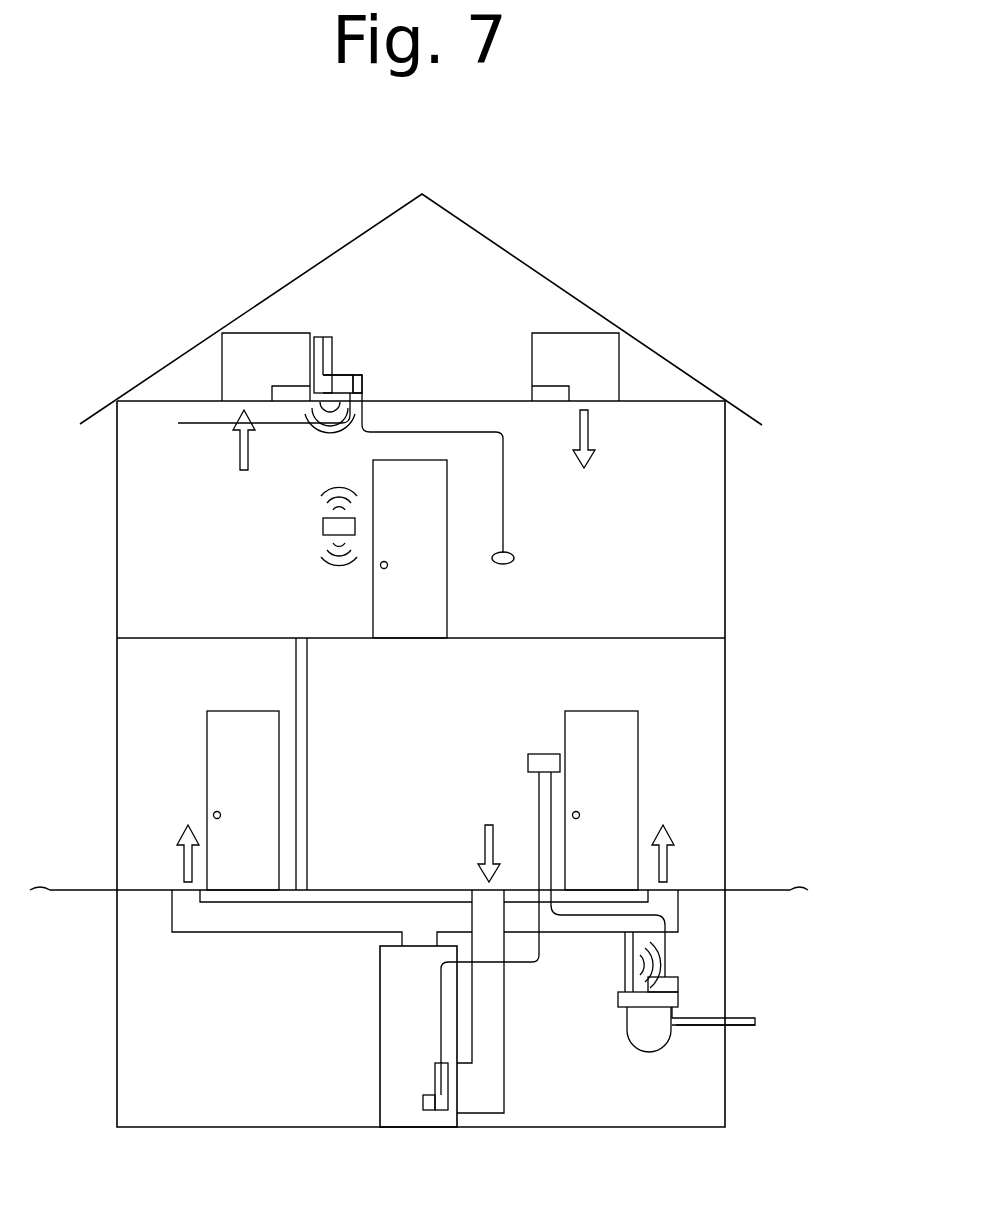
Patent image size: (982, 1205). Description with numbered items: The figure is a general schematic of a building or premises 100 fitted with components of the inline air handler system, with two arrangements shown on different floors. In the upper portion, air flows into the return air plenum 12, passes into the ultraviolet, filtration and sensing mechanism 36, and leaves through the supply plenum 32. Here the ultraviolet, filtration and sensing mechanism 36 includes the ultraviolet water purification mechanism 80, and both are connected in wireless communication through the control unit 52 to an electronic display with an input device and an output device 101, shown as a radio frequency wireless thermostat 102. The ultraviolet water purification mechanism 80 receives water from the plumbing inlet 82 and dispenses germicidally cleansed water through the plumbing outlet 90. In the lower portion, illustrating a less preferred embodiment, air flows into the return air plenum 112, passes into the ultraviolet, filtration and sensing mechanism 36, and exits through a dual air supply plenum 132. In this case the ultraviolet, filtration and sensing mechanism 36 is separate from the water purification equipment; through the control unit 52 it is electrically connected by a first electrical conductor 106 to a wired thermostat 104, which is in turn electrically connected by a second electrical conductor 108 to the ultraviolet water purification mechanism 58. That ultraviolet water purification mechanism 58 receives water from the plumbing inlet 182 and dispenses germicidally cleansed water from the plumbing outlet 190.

The building or premises 100 is at (697, 316).
The return air plenum 12 is at (236, 376).
The supply plenum 32 is at (561, 376).
The ultraviolet, filtration and sensing mechanism 36 is at (338, 342).
The control unit 52 is at (340, 378).
The ultraviolet water purification mechanism 80 is at (365, 388).
The plumbing inlet 82 is at (205, 424).
The plumbing outlet 90 is at (503, 466).
The electronic display with an input device and an output device 101 is at (313, 544).
The wireless thermostat 102 is at (323, 525).
The wired thermostat 104 is at (528, 760).
The first electrical conductor 106 is at (539, 813).
The second electrical conductor 108 is at (551, 838).
The return air plenum 112 is at (750, 745).
The dual air supply plenum 132 is at (193, 918).
The ultraviolet water purification mechanism 58 is at (633, 1025).
The plumbing inlet 182 is at (755, 1018).
The plumbing outlet 190 is at (745, 1027).